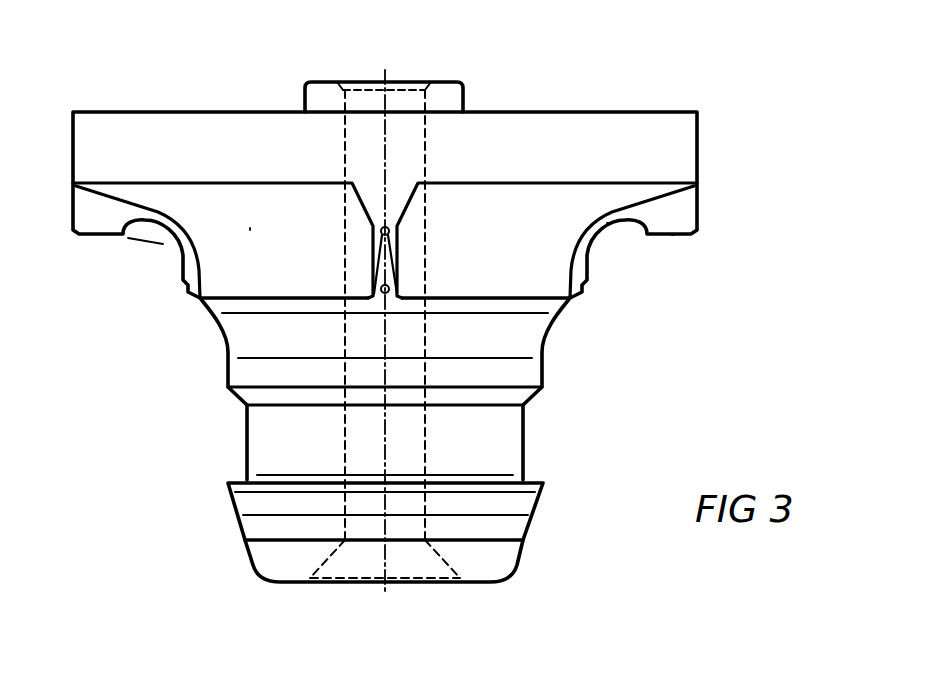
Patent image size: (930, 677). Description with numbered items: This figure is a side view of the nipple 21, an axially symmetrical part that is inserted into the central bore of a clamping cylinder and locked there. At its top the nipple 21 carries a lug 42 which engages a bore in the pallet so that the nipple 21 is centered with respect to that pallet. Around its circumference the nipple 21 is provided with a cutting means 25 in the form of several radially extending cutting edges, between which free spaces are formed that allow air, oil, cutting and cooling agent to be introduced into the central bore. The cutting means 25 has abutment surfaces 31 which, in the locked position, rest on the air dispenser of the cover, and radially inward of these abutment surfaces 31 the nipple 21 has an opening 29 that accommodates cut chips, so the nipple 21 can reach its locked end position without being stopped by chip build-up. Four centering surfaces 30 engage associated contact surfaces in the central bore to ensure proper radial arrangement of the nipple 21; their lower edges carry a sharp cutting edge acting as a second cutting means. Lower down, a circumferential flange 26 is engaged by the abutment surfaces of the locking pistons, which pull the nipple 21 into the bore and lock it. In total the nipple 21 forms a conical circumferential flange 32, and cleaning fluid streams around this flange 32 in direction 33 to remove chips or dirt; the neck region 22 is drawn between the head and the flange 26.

The nipple 21 is at (523, 152).
The neck 22 is at (550, 332).
The cutting means 25 is at (456, 3).
The circumferential flange 26 is at (533, 481).
The opening 29 is at (607, 223).
The centering surfaces 30 is at (393, 288).
The abutment surfaces 31 is at (672, 235).
The circumferential flange 32 is at (248, 230).
The direction 33 is at (163, 245).
The lug 42 is at (327, 92).